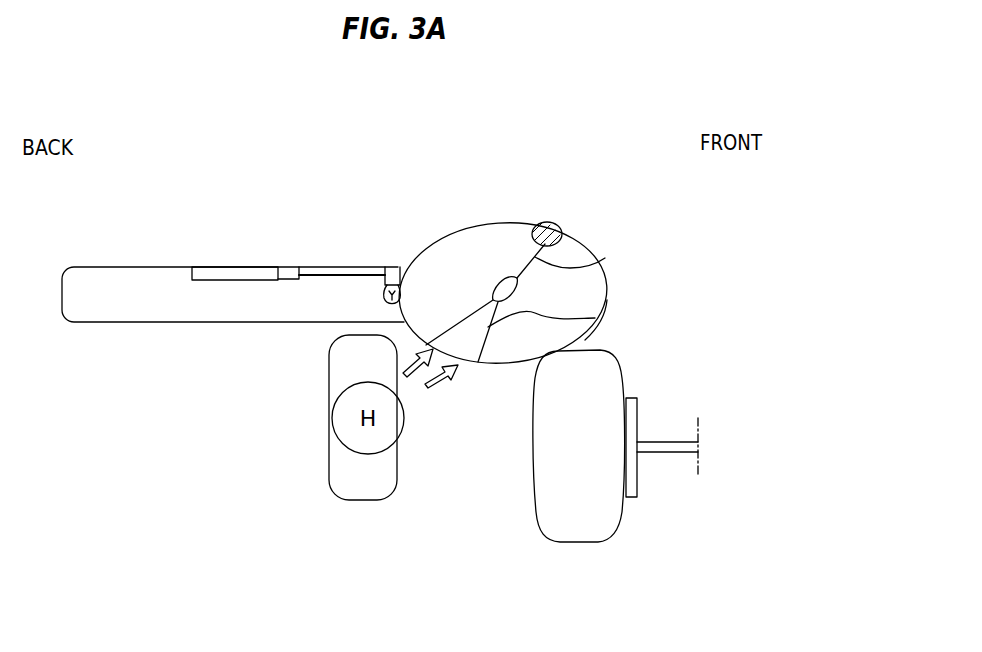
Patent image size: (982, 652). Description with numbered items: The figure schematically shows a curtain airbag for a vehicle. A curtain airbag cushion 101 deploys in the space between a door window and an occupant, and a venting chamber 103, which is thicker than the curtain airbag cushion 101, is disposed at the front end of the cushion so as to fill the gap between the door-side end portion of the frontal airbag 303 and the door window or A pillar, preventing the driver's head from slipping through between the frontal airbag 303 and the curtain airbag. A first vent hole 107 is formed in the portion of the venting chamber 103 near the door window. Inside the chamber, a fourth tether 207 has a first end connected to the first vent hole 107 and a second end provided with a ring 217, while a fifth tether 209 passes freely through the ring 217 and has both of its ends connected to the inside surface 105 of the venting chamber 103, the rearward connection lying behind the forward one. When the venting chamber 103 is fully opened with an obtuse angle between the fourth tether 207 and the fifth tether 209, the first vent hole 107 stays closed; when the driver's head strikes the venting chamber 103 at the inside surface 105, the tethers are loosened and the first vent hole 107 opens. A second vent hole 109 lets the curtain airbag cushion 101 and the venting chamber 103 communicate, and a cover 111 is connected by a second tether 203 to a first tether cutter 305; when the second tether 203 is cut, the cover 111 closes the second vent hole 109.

The curtain airbag cushion 101 is at (100, 267).
The venting chamber 103 is at (486, 237).
The inside surface 105 is at (585, 338).
The first vent hole 107 is at (551, 232).
The second vent hole 109 is at (385, 292).
The cover 111 is at (394, 268).
The second tether 203 is at (303, 267).
The fourth tether 207 is at (605, 258).
The fifth tether 209 is at (595, 318).
The ring 217 is at (502, 281).
The frontal airbag 303 is at (582, 543).
The first tether cutter 305 is at (238, 270).